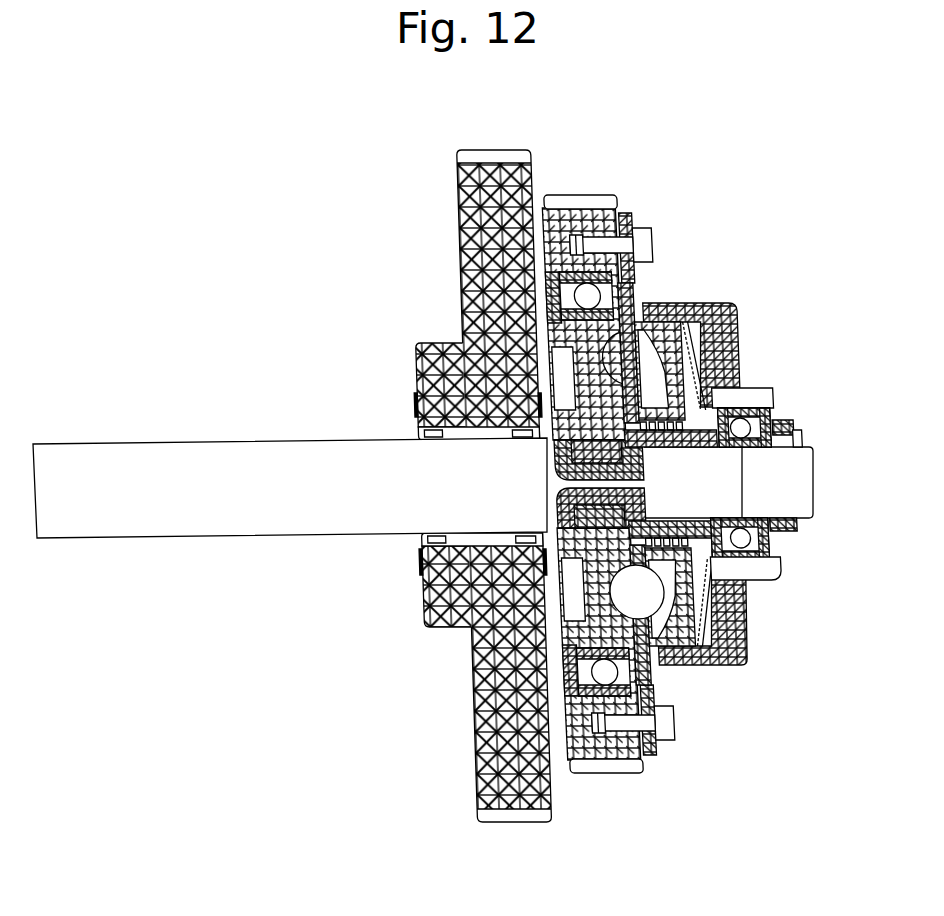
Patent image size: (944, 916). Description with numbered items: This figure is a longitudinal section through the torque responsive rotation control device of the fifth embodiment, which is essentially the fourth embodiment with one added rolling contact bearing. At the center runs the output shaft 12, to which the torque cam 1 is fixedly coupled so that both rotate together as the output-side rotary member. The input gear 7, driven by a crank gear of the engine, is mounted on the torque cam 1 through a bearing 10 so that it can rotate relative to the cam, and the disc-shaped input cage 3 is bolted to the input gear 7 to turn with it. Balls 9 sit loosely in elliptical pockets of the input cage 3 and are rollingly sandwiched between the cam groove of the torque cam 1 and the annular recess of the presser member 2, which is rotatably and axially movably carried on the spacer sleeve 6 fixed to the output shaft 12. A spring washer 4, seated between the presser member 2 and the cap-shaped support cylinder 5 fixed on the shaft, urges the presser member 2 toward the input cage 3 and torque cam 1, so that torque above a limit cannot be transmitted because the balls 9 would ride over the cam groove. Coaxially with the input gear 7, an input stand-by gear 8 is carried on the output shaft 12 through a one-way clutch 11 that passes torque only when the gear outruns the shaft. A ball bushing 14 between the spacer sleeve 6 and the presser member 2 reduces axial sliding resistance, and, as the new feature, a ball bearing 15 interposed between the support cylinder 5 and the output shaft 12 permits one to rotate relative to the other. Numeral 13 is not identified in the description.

The torque cam 1 is at (637, 593).
The presser member 2 is at (688, 660).
The input cage 3 is at (638, 307).
The spring washer 4 is at (745, 657).
The support cylinder 5 is at (737, 346).
The spacer sleeve 6 is at (747, 605).
The input gear 7 is at (582, 245).
The input stand-by gear 8 is at (500, 293).
The balls 9 is at (660, 663).
The bearing 10 is at (638, 265).
The one-way clutch 11 is at (427, 622).
The output shaft 12 is at (287, 470).
The hub 13 is at (500, 392).
The ball bushing 14 is at (773, 395).
The ball bearing 15 is at (765, 563).